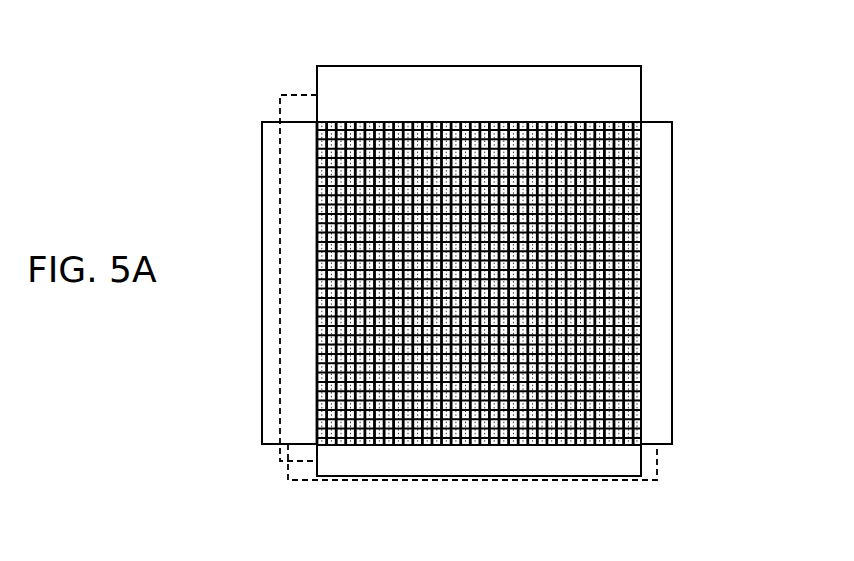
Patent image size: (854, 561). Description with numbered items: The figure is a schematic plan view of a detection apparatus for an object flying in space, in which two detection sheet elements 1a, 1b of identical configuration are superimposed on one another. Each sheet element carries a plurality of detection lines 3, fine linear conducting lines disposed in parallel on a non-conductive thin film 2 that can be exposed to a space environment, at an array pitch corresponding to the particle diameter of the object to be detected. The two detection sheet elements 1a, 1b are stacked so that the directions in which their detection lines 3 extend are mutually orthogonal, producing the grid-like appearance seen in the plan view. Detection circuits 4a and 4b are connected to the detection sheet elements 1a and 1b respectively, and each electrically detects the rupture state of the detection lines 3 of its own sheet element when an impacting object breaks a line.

The detection sheet element 1a is at (647, 306).
The detection sheet element 1b is at (601, 445).
The non-conductive thin film 2 is at (641, 162).
The detection lines 3 is at (615, 252).
The detection circuit 4a is at (452, 77).
The detection circuit 4b is at (268, 233).